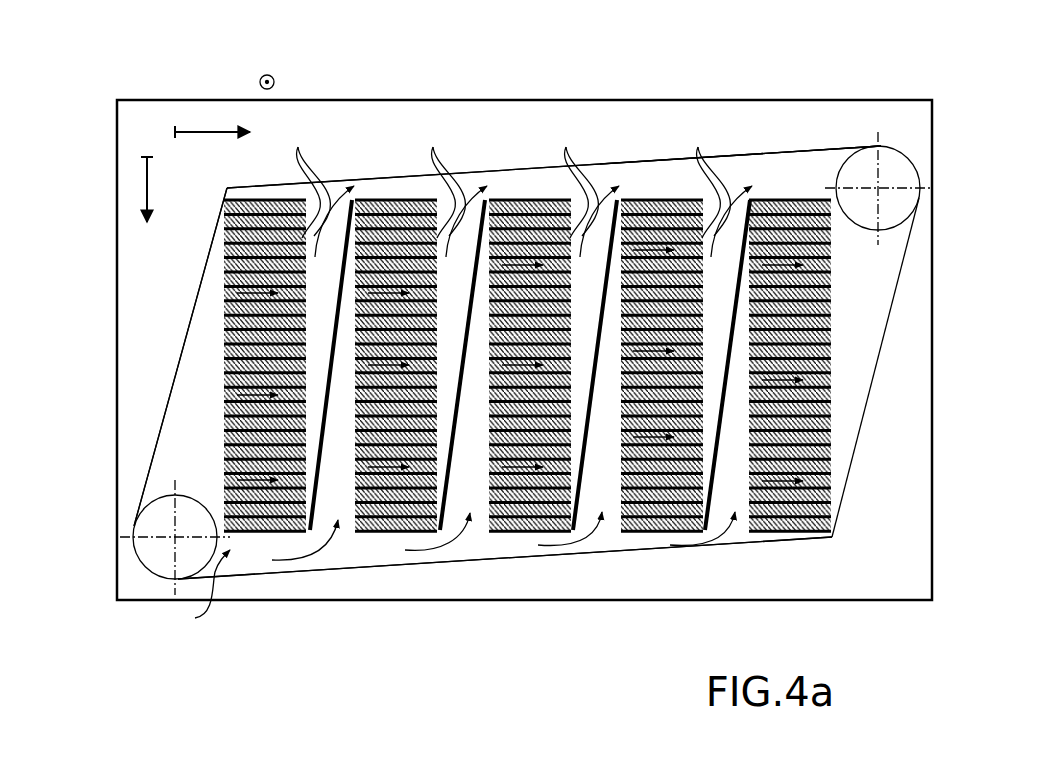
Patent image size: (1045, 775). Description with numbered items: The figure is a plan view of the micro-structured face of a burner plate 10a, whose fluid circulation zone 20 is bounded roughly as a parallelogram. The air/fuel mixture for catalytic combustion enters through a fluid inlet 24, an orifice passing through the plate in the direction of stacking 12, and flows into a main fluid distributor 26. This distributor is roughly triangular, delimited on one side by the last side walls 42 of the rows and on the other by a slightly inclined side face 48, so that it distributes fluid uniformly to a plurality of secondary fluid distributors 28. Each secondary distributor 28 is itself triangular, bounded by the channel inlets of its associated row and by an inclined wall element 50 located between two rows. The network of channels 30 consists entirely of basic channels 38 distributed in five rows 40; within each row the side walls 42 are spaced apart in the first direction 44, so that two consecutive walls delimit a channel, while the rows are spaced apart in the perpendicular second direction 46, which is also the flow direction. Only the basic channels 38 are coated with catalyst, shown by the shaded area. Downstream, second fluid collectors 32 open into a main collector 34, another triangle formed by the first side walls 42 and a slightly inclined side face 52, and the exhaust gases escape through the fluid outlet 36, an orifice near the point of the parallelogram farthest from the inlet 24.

The burner plate 10a is at (126, 88).
The direction of stacking 12 is at (274, 80).
The fluid circulation zone 20 is at (174, 436).
The fluid inlet 24 is at (153, 508).
The main fluid distributor 26 is at (197, 590).
The secondary fluid distributors 28 is at (743, 485).
The network of channels 30 is at (307, 638).
The second fluid collectors 32 is at (875, 295).
The main collector 34 is at (793, 166).
The fluid outlet 36 is at (894, 155).
The basic channels 38 is at (875, 477).
The rows 40 is at (271, 537).
The side walls 42 is at (224, 268).
The first direction 44 is at (147, 198).
The second direction 46 is at (207, 135).
The side face 48 is at (268, 572).
The wall element 50 is at (178, 368).
The side face 52 is at (502, 170).